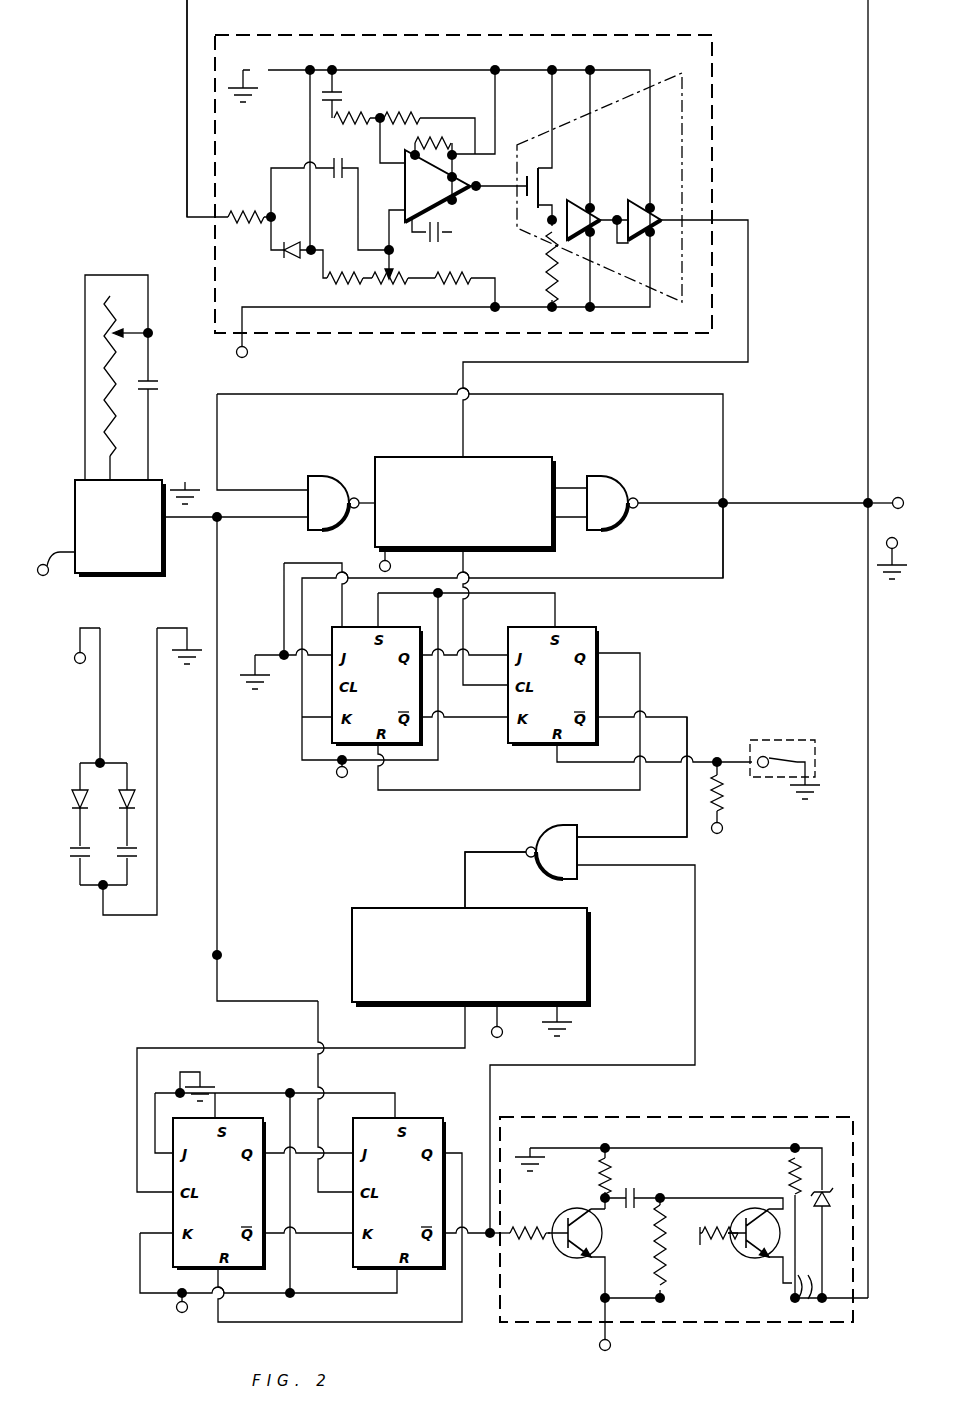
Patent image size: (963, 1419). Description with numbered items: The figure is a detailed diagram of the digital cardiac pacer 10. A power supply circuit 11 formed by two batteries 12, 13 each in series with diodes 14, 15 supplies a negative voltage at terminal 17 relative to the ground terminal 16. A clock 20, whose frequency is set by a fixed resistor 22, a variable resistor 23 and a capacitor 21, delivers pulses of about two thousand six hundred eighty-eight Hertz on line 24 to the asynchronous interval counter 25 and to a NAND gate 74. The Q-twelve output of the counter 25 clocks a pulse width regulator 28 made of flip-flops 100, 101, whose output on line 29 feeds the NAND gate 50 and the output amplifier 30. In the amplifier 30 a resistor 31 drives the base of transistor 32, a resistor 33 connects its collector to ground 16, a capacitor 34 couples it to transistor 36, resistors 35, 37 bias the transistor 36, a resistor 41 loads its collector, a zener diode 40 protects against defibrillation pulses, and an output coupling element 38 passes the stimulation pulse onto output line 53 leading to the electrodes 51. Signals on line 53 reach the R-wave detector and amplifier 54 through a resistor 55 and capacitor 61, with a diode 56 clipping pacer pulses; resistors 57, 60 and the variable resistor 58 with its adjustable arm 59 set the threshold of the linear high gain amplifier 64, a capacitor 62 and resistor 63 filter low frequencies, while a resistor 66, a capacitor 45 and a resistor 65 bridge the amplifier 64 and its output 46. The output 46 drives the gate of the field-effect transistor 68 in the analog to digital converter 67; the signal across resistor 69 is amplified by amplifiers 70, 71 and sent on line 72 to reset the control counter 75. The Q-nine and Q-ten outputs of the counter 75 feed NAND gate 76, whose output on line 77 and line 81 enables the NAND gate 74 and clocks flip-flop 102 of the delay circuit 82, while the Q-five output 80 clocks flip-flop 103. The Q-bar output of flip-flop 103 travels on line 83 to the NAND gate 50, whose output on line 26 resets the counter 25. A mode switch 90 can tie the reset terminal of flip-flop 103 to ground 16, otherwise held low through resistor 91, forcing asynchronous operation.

The pacer 10 is at (150, 56).
The power supply circuit 11 is at (86, 714).
The battery 12 is at (70, 846).
The battery 13 is at (124, 846).
The diode 14 is at (72, 800).
The diode 15 is at (127, 794).
The ground terminal 16 is at (242, 88).
The negative voltage terminal 17 is at (250, 352).
The clock 20 is at (75, 520).
The capacitor 21 is at (160, 384).
The fixed resistor 22 is at (120, 415).
The variable resistor 23 is at (142, 333).
The output line 24 is at (217, 831).
The asynchronous interval counter 25 is at (409, 907).
The reset line 26 is at (490, 850).
The pulse width regulator 28 is at (150, 1216).
The line 29 is at (695, 913).
The output amplifier 30 is at (692, 1119).
The resistor 31 is at (538, 1240).
The n-p-n transistor 32 is at (575, 1212).
The resistor 33 is at (600, 1180).
The capacitor 34 is at (632, 1192).
The resistor 35 is at (657, 1243).
The n-p-n transistor 36 is at (730, 1209).
The resistor 37 is at (696, 1250).
The relay coil 38 is at (815, 1336).
The zener diode 40 is at (824, 1208).
The resistor 41 is at (789, 1172).
The capacitor 45 is at (444, 240).
The output 46 is at (502, 190).
The NAND gate 50 is at (552, 832).
The output electrodes 51 is at (907, 512).
The output line 53 is at (187, 119).
The R-wave detector and amplifier 54 is at (214, 265).
The resistor 55 is at (266, 216).
The diode 56 is at (294, 260).
The resistor 57 is at (354, 275).
The variable resistor 58 is at (395, 283).
The adjustable arm 59 is at (393, 270).
The resistor 60 is at (472, 276).
The capacitor 61 is at (346, 179).
The capacitor 62 is at (337, 95).
The resistor 63 is at (374, 112).
The linear high gain amplifier 64 is at (404, 190).
The resistor 65 is at (416, 110).
The resistor 66 is at (432, 142).
The analog to digital converter 67 is at (626, 137).
The field-effect transistor 68 is at (546, 178).
The resistor 69 is at (552, 284).
The amplifier 70 is at (616, 208).
The amplifier 71 is at (672, 206).
The line 72 is at (752, 217).
The NAND gate 74 is at (350, 479).
The control counter 75 is at (440, 461).
The NAND gate 76 is at (624, 477).
The output line 77 is at (728, 483).
The output 80 is at (472, 567).
The line 81 is at (728, 506).
The delay circuit 82 is at (692, 611).
The line 83 is at (662, 839).
The mode switch 90 is at (783, 742).
The resistor 91 is at (722, 797).
The J-K master-slave flip-flop 100 is at (227, 1119).
The J-K master-slave flip-flop 101 is at (404, 1119).
The J-K master-slave flip-flop 102 is at (424, 628).
The J-K master-slave flip-flop 103 is at (613, 622).